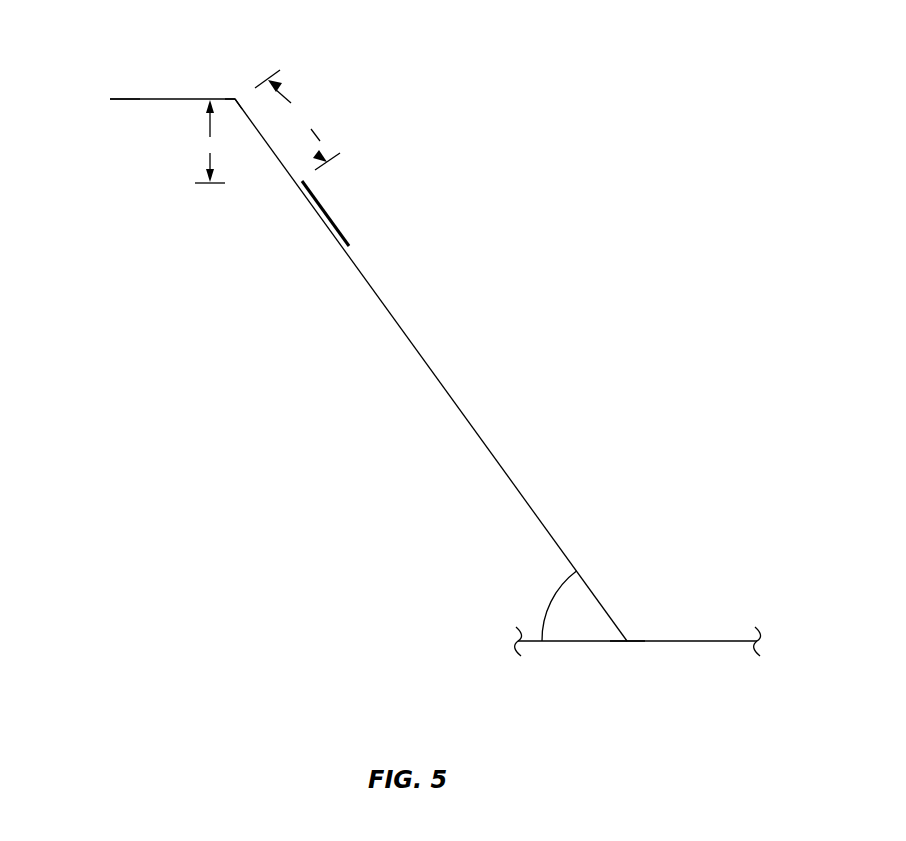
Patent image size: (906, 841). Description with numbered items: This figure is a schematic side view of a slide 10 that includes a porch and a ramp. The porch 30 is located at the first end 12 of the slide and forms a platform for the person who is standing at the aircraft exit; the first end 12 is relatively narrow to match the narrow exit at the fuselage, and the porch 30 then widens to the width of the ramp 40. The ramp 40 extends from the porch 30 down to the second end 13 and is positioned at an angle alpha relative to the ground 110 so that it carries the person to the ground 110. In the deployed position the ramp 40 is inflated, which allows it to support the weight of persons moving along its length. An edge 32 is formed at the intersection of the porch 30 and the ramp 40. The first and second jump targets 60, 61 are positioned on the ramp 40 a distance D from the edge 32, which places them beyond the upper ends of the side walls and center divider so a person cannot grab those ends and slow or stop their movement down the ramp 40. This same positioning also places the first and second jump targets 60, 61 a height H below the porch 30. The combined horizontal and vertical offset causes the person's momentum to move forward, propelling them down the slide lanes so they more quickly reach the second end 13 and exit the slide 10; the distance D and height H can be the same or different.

The slide 10 is at (550, 223).
The first end 12 is at (110, 99).
The porch 30 is at (183, 99).
The edge 32 is at (235, 99).
The ramp 40 is at (480, 437).
The first jump target 60 is at (393, 213).
The second jump target 61 is at (323, 208).
The second end 13 is at (632, 638).
The ground 110 is at (779, 698).